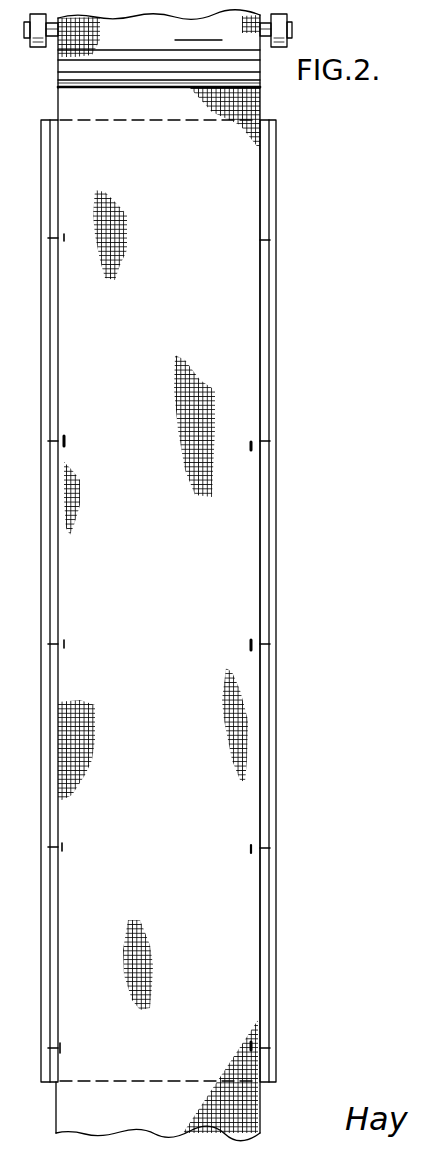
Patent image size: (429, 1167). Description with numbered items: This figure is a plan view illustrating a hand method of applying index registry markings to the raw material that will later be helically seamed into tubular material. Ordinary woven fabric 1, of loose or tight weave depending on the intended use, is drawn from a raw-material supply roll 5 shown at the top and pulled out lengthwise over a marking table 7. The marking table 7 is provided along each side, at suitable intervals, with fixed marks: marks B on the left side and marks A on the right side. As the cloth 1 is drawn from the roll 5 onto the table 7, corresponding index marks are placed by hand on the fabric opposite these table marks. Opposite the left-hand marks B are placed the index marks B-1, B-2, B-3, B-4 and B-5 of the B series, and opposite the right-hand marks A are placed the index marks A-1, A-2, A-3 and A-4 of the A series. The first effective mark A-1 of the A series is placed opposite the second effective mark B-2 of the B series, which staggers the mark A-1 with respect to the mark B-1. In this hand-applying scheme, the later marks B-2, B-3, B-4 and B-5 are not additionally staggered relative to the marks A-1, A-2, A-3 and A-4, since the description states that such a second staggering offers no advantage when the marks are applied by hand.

The woven fabric 1 is at (246, 103).
The raw-material supply roll 5 is at (240, 42).
The marking table 7 is at (270, 291).
The marks on the right side of the marking table A is at (263, 240).
The marks on the left side of the marking table B is at (47, 238).
The first effective index mark of the A series A-1 is at (251, 445).
The second index mark of the A series A-2 is at (250, 645).
The third index mark of the A series A-3 is at (250, 850).
The fourth index mark of the A series A-4 is at (250, 1045).
The first index mark of the B series B-1 is at (64, 241).
The second effective index mark of the B series B-2 is at (66, 443).
The third index mark of the B series B-3 is at (65, 644).
The fourth index mark of the B series B-4 is at (63, 847).
The fifth index mark of the B series B-5 is at (61, 1048).